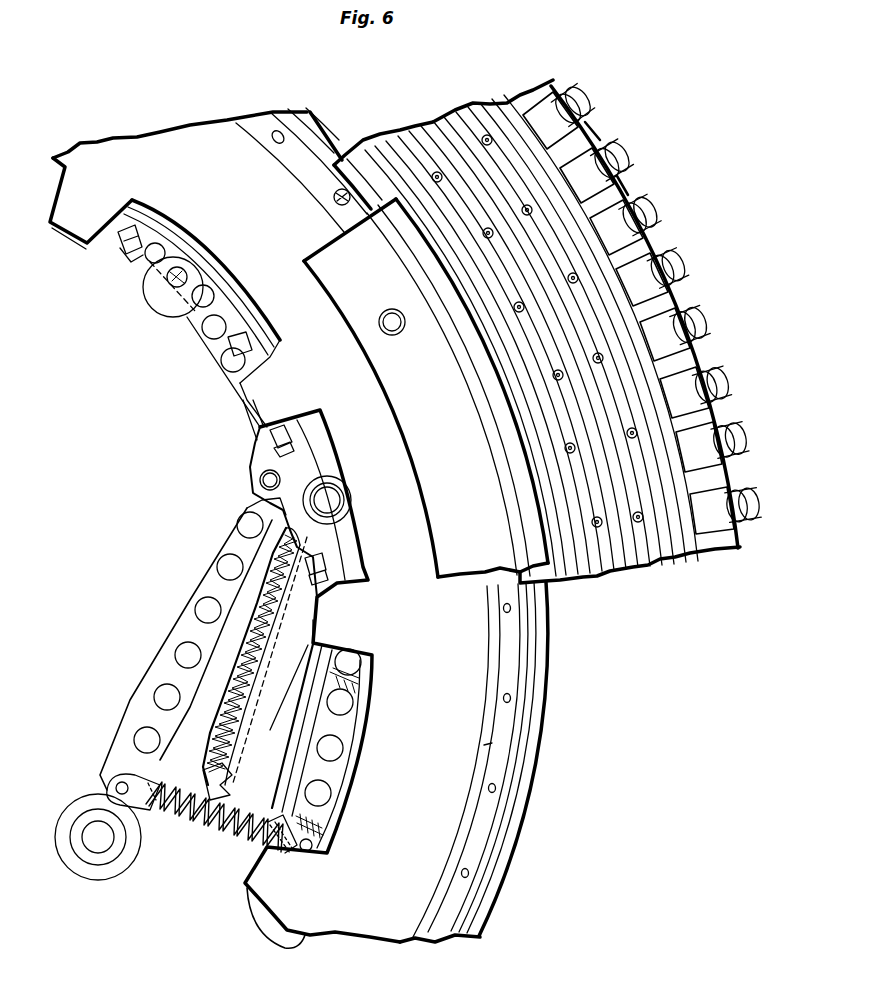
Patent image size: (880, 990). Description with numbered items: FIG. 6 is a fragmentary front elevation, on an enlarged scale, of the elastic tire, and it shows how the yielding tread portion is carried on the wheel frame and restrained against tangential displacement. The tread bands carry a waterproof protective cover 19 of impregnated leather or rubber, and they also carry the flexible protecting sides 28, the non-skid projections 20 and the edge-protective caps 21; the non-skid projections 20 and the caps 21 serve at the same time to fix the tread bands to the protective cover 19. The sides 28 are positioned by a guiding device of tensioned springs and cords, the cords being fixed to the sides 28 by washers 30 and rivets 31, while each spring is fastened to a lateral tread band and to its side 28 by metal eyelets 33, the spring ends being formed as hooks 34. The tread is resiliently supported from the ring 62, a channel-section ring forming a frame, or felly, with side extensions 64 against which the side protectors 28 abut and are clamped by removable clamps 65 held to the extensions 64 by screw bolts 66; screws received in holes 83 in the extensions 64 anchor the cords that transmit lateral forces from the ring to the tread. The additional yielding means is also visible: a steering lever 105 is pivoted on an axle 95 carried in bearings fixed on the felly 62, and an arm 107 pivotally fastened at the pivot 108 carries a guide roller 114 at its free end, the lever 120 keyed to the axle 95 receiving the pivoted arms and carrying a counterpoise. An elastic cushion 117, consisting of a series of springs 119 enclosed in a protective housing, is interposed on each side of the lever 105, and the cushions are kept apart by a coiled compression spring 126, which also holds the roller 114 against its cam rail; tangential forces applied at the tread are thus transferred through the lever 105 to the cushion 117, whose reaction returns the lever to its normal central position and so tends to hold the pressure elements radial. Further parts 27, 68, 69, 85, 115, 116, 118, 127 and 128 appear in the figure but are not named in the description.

The waterproof protective cover 19 is at (603, 136).
The non-skid projection 20 is at (582, 102).
The edge-protective cap 21 is at (628, 313).
The connecting lead 27 is at (612, 198).
The protecting side 28 is at (630, 565).
The washer 30 is at (482, 141).
The rivet 31 is at (486, 146).
The metal eyelet 33 is at (597, 363).
The hook 34 is at (596, 353).
The ring 62 is at (321, 671).
The side extension 64 is at (357, 975).
The removable clamp 65 is at (426, 388).
The screw bolt 66 is at (392, 315).
The guide bar 68 is at (200, 277).
The bolt 69 is at (127, 248).
The hole 83 is at (503, 608).
The screw 85 is at (334, 201).
The axle 95 is at (327, 500).
The steering lever 105 is at (280, 508).
The arm 107 is at (186, 649).
The pivot 108 is at (260, 480).
The guide roller 114 is at (252, 902).
The guide strip 115 is at (292, 792).
The spring seat 116 is at (196, 781).
The elastic cushion 117 is at (222, 738).
The brake shoe 118 is at (310, 722).
The spring 119 is at (232, 710).
The lever 120 is at (233, 378).
The coiled compression spring 126 is at (197, 832).
The spring end 127 is at (288, 842).
The anchor pin 128 is at (112, 778).